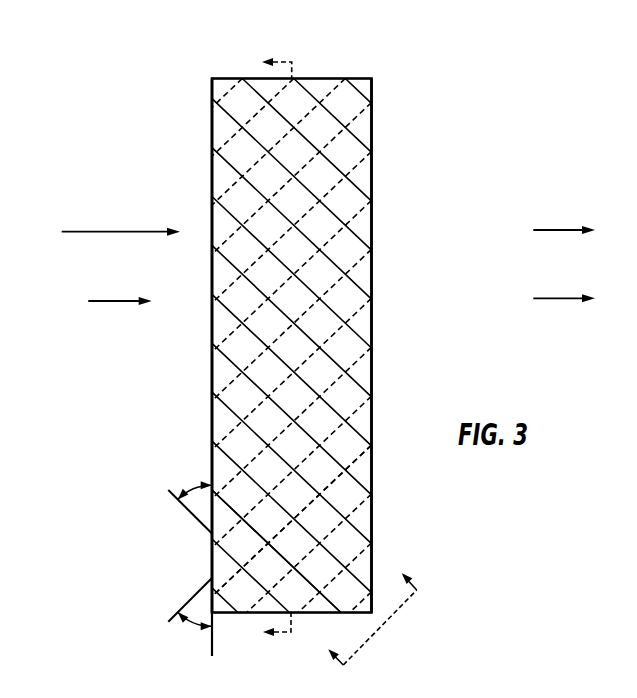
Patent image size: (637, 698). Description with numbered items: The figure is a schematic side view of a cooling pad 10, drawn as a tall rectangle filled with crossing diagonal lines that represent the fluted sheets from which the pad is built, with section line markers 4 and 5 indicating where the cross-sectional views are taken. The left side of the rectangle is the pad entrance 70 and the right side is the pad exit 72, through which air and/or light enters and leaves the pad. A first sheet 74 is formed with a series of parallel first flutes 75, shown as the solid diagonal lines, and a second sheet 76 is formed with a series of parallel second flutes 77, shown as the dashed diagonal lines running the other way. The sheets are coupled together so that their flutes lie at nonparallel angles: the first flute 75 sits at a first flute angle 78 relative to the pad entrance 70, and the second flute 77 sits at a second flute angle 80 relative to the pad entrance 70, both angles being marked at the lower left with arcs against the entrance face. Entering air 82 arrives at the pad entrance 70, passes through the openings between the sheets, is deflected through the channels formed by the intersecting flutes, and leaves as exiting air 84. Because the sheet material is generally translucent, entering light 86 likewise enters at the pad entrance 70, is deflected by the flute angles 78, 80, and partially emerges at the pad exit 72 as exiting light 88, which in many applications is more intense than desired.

The cooling pad 10 is at (431, 83).
The pad entrance 70 is at (212, 117).
The pad exit 72 is at (372, 143).
The first sheet 74 is at (360, 278).
The first flute 75 is at (370, 330).
The second sheet 76 is at (347, 392).
The second flute 77 is at (357, 460).
The first flute angle 78 is at (187, 482).
The second flute angle 80 is at (192, 632).
The entering air 82 is at (102, 300).
The exiting air 84 is at (540, 298).
The entering light 86 is at (102, 232).
The exiting light 88 is at (540, 230).
The section line 4- 4 is at (267, 348).
The section line 5- 5 is at (366, 609).